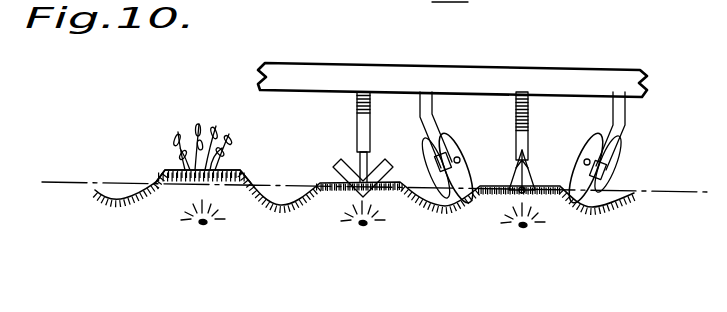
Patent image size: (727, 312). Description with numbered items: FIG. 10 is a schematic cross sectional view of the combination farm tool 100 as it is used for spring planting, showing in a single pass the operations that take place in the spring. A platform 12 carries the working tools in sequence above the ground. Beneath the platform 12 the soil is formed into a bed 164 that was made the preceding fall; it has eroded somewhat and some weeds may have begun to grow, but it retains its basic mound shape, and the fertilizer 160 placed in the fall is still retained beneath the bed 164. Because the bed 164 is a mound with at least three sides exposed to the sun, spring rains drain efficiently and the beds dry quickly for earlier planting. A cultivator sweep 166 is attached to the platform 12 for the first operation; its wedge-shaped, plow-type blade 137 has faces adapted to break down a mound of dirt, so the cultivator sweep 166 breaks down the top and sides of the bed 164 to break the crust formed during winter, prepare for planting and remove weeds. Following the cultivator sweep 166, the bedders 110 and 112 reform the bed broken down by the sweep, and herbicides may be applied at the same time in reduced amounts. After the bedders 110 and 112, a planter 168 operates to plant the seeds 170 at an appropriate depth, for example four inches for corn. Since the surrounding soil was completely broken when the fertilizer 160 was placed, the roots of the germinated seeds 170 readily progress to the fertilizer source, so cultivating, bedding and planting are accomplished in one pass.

The agricultural implement 100 is at (453, 3).
The platform 12 is at (458, 67).
The cultivator sweep 166 is at (351, 117).
The plow-type blade 137 is at (338, 157).
The bedder 110 is at (449, 141).
The planter 168 is at (530, 113).
The bedder 112 is at (621, 150).
The bed 164 is at (235, 171).
The fertilizer 160 is at (203, 226).
The seeds 170 is at (526, 193).